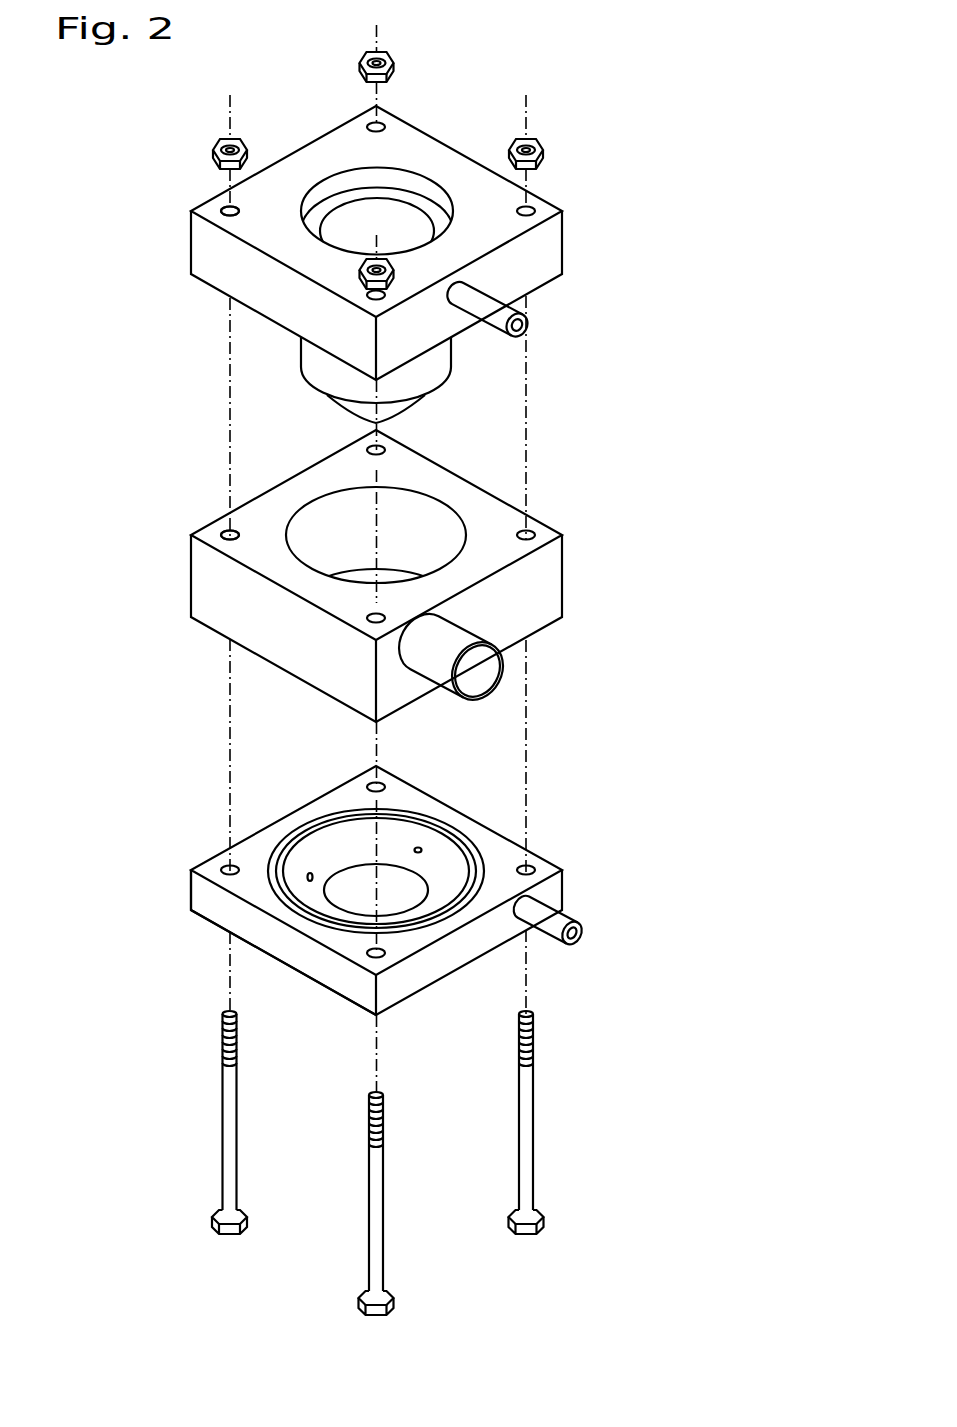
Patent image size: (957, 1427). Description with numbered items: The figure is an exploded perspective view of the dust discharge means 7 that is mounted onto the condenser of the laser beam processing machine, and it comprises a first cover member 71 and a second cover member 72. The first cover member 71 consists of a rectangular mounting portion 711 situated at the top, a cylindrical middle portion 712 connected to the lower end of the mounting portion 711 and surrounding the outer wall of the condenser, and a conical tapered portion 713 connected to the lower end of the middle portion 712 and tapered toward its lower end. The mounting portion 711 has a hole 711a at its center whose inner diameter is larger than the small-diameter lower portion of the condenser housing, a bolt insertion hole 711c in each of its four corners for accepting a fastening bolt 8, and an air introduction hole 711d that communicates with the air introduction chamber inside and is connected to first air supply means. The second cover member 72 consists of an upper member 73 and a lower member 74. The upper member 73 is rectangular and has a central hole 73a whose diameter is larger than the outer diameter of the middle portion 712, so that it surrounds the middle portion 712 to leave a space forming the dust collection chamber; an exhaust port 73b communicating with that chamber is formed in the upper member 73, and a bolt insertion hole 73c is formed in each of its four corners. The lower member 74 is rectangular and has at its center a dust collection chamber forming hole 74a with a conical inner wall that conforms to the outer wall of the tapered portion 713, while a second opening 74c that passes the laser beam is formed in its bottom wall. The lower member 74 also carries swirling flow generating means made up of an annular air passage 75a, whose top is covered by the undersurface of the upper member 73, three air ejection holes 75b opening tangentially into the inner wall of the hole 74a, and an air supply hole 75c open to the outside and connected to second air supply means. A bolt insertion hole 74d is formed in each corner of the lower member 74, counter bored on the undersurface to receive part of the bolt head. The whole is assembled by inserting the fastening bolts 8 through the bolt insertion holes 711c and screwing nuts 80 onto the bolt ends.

The dust discharge means 7 is at (572, 110).
The fastening bolt 8 is at (213, 1222).
The first cover member 71 is at (546, 201).
The mounting portion 711 is at (333, 147).
The hole 711a is at (407, 217).
The bolt insertion hole 711c is at (230, 207).
The air introduction hole 711d is at (530, 330).
The middle portion 712 is at (310, 362).
The tapered portion 713 is at (392, 407).
The second cover member 72 is at (120, 555).
The upper member 73 is at (546, 523).
The hole 73a is at (323, 523).
The exhaust port 73b is at (482, 680).
The bolt insertion hole 73c is at (224, 532).
The lower member 74 is at (546, 858).
The dust collection chamber forming hole 74a is at (435, 863).
The second opening 74c is at (355, 903).
The bolt insertion hole 74d is at (258, 890).
The annular air passage 75a is at (300, 833).
The air ejection hole 75b is at (418, 847).
The air supply hole 75c is at (582, 930).
The nut 80 is at (390, 56).